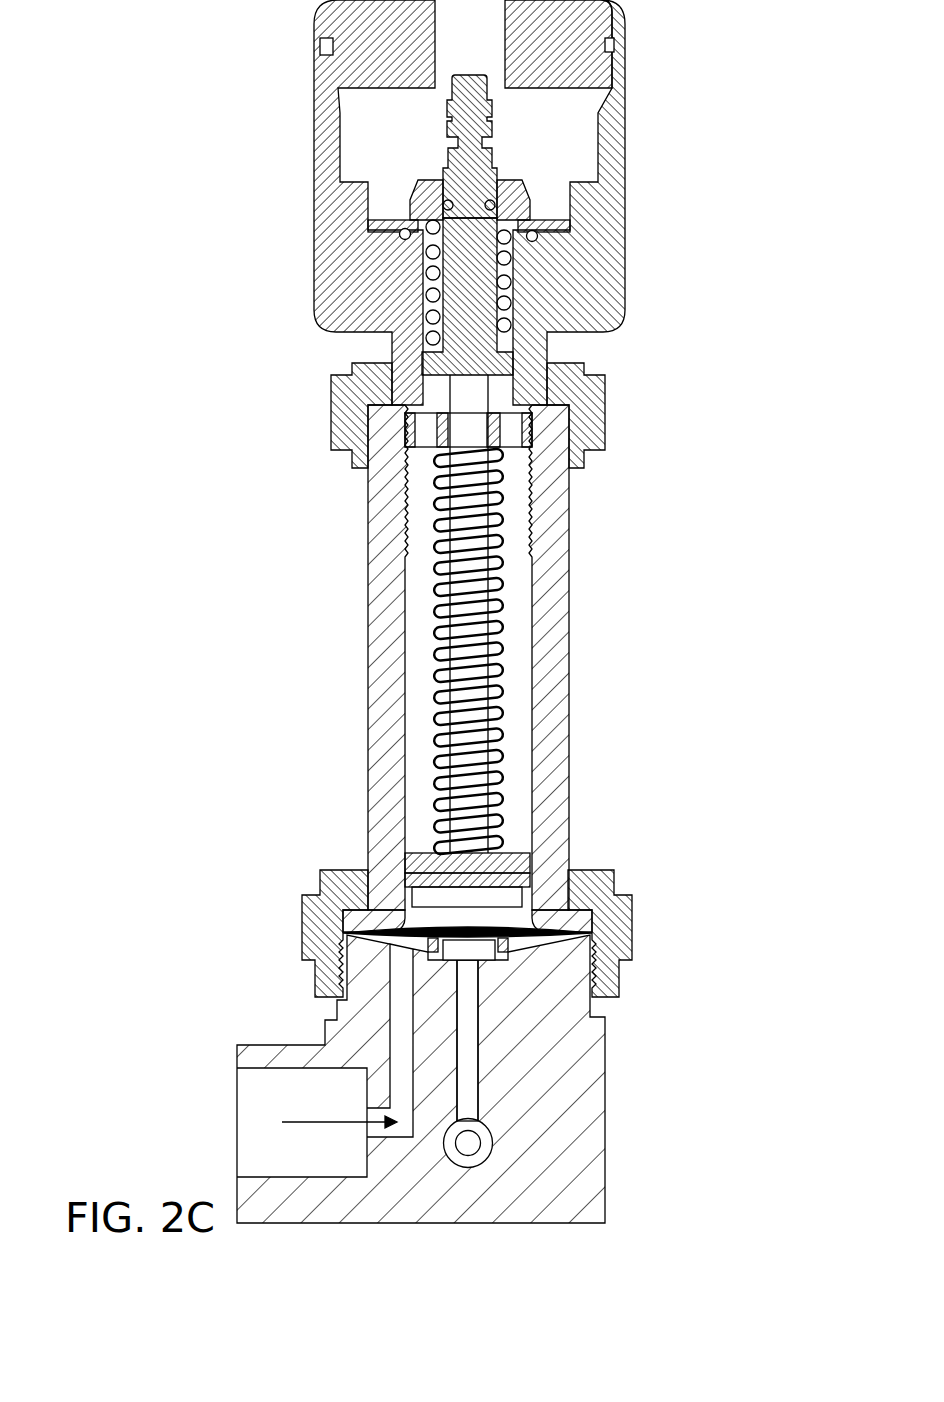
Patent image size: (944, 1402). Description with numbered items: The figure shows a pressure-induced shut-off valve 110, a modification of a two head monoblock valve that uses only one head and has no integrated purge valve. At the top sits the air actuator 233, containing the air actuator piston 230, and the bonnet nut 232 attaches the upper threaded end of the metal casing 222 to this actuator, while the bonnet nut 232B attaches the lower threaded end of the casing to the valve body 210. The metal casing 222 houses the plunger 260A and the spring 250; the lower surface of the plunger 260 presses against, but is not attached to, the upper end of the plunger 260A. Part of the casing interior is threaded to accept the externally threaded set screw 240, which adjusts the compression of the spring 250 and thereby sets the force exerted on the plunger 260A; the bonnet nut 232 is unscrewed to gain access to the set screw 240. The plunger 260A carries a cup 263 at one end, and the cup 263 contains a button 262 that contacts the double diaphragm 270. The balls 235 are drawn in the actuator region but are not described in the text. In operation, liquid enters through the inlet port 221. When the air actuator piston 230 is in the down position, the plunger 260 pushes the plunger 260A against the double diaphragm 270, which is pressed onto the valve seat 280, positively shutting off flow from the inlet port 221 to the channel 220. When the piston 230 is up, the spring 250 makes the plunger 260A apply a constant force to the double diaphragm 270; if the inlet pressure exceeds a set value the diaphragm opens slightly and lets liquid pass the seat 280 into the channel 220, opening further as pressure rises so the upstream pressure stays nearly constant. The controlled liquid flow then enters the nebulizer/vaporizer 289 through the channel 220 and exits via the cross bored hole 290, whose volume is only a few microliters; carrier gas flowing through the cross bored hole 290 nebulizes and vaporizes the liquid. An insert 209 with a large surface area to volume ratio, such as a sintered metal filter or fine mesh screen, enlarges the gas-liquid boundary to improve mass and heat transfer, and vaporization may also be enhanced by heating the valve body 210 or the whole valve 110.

The pressure-induced shut-off valve 110 is at (456, 645).
The air actuator piston 230 is at (485, 142).
The air actuator 233 is at (625, 197).
The ball bearings 235 is at (430, 270).
The plunger 260 is at (485, 318).
The externally threaded set screw 240 is at (515, 428).
The bonnet nut 232 is at (333, 400).
The spring 250 is at (500, 537).
The metal casing 222 is at (366, 618).
The plunger 260A is at (478, 832).
The cup 263 is at (535, 866).
The double diaphragm 270 is at (442, 933).
The button 262 is at (487, 917).
The bonnet nut 232B is at (634, 940).
The valve seat 280 is at (500, 953).
The channel 220 is at (478, 1030).
The cross bored hole 290 is at (482, 1122).
The inlet port 221 is at (226, 1117).
The insert 209 is at (467, 1148).
The nebulizer/vaporizer 289 is at (475, 1190).
The valve body 210 is at (606, 1193).